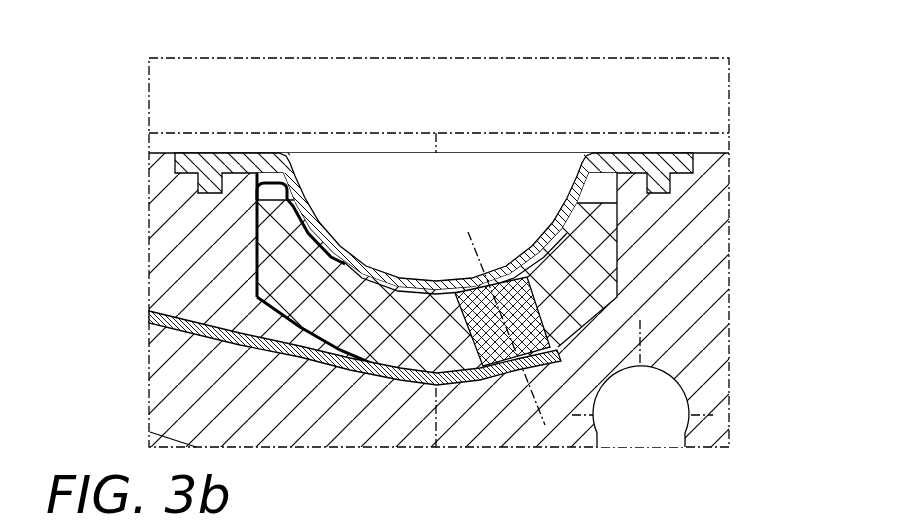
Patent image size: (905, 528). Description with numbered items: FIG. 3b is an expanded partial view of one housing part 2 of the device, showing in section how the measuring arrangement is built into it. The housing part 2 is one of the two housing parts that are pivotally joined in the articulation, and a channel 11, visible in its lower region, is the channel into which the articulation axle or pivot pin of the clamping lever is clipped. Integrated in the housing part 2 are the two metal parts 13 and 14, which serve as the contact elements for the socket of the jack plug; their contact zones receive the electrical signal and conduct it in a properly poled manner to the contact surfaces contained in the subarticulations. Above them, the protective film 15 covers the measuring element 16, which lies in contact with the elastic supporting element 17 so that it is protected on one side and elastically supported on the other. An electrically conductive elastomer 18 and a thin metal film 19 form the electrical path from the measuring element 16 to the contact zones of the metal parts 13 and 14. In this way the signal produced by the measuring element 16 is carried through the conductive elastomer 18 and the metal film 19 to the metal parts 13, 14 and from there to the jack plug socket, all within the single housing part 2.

The housing part 2 is at (703, 255).
The channel 11 is at (618, 430).
The metal part 13 is at (355, 402).
The metal part 14 is at (240, 343).
The protective film 15 is at (434, 193).
The measuring element 16 is at (560, 240).
The elastic supporting element 17 is at (308, 282).
The electrically conductive elastomer 18 is at (511, 292).
The thin metal film 19 is at (290, 207).